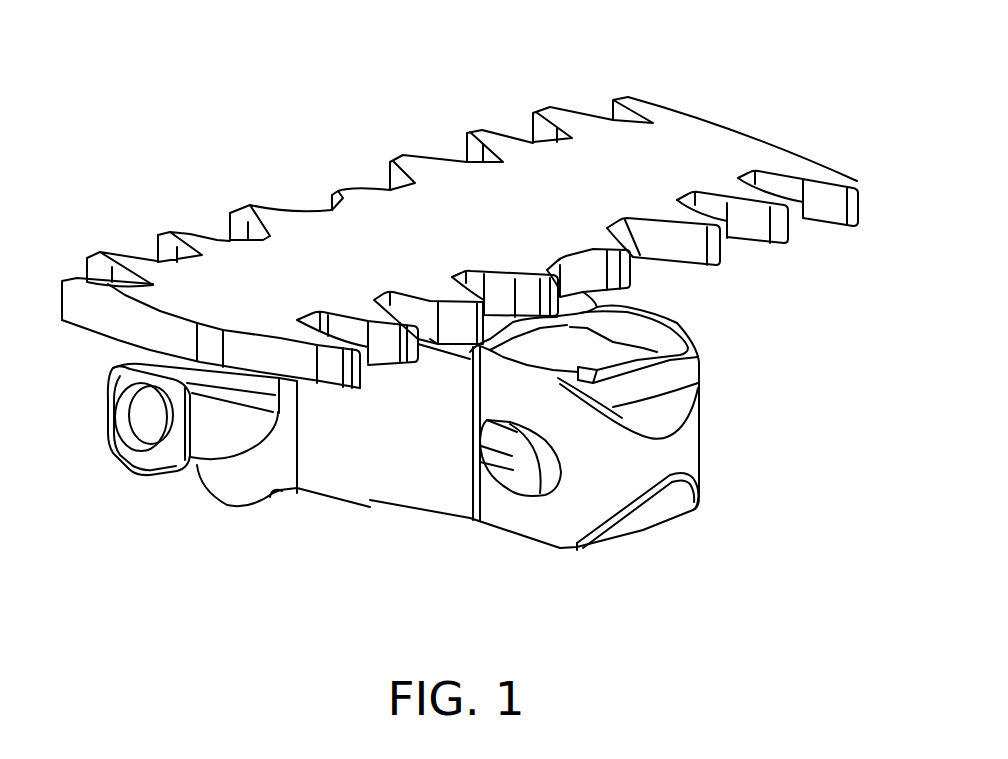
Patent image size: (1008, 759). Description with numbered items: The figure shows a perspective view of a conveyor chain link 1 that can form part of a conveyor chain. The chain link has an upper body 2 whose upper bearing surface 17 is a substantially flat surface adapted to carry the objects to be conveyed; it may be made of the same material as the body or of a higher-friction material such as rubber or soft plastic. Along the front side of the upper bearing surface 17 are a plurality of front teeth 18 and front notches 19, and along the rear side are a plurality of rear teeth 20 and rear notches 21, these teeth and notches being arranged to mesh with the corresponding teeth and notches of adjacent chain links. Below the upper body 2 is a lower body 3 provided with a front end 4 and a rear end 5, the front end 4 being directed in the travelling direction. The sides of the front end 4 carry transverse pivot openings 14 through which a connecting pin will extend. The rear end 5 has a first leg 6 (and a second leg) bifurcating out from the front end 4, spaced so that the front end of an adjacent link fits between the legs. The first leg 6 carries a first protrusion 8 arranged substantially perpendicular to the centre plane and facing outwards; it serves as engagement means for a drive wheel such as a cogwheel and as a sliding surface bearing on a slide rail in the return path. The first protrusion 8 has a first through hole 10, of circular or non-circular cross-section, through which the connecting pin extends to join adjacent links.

The conveyor chain link 1 is at (278, 101).
The upper body 2 is at (787, 120).
The lower body 3 is at (728, 405).
The front end 4 is at (543, 565).
The rear end 5 is at (120, 478).
The first leg 6 is at (243, 482).
The first protrusion 8 is at (222, 433).
The first through hole 10 is at (110, 440).
The transverse pivot openings 14 is at (523, 480).
The upper bearing surface 17 is at (697, 155).
The front teeth 18 is at (797, 253).
The front notches 19 is at (755, 280).
The rear teeth 20 is at (163, 210).
The rear notches 21 is at (210, 203).